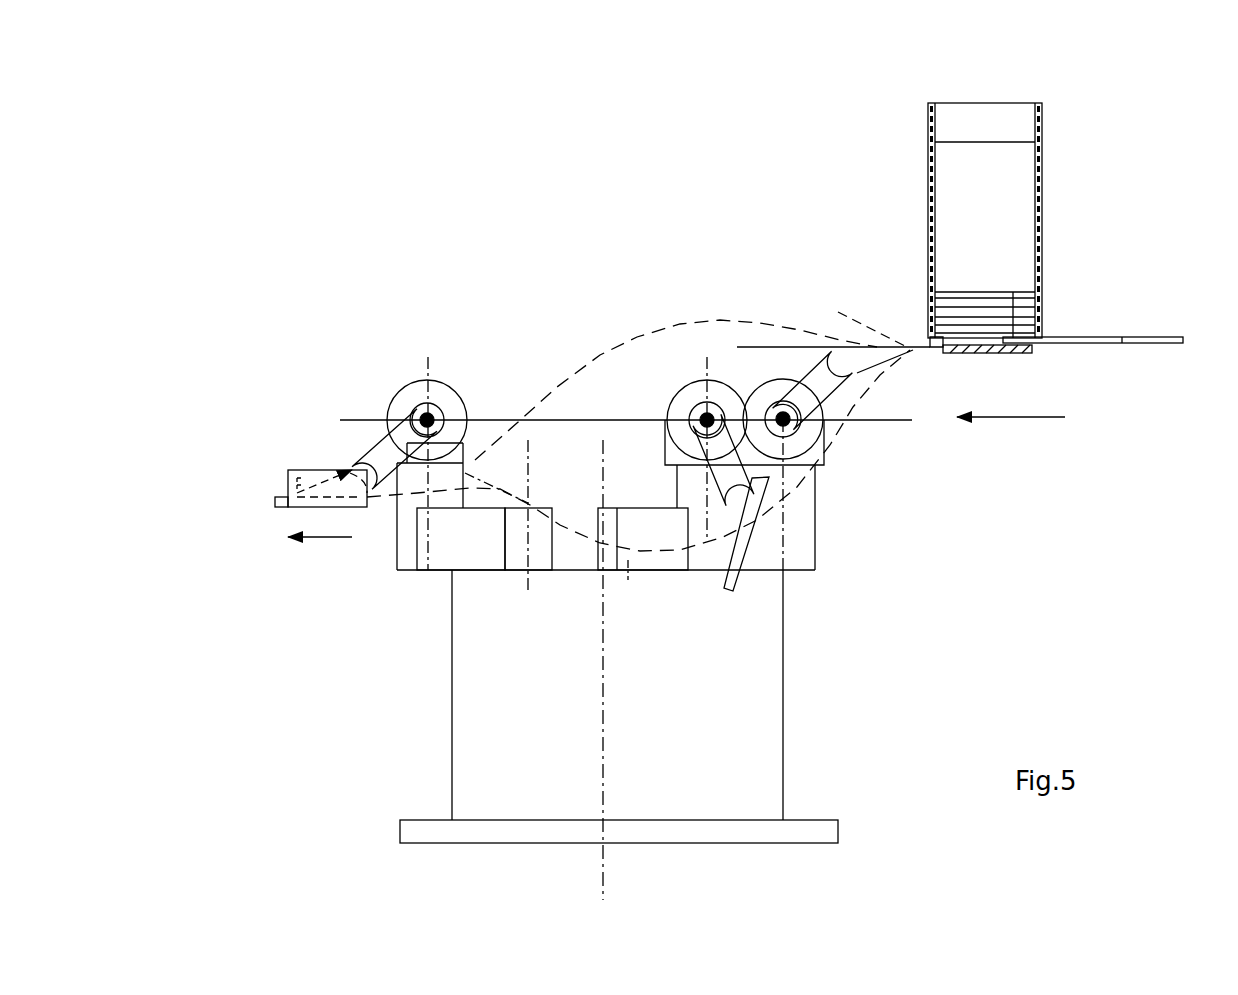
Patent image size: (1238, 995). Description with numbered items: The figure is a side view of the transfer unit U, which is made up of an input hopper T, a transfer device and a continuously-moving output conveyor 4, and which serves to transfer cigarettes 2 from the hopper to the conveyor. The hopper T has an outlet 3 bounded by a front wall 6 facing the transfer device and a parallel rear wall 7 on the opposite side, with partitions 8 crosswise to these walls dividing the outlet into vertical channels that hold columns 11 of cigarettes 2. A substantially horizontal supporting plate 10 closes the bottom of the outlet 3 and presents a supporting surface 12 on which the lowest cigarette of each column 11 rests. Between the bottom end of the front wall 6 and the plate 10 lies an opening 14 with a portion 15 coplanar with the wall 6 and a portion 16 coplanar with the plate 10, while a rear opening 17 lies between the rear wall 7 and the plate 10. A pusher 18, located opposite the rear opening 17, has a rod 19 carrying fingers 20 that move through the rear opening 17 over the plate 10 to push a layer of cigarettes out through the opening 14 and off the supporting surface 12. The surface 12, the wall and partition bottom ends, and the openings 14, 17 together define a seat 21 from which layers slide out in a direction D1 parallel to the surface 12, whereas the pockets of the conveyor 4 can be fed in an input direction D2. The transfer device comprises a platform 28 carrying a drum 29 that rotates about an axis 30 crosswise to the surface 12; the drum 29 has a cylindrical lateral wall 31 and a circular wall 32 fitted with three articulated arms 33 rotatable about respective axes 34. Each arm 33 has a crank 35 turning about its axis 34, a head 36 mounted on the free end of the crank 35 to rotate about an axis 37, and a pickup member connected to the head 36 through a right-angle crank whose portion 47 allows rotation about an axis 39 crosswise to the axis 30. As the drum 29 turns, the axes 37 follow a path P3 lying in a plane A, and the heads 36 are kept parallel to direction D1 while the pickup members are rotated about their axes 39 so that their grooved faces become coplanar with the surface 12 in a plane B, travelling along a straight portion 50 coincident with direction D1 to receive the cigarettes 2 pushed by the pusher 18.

The cigarettes 2 is at (1027, 305).
The outlet 3 is at (1075, 228).
The output conveyor 4 is at (270, 522).
The front wall 6 is at (930, 175).
The rear wall 7 is at (1040, 188).
The partitions 8 is at (985, 165).
The supporting plate 10 is at (1013, 353).
The columns 11 is at (997, 298).
The supporting surface 12 is at (985, 343).
The opening 14 is at (923, 362).
The portion 15 is at (925, 340).
The portion 16 is at (935, 352).
The rear opening 17 is at (1047, 325).
The pusher 18 is at (1142, 350).
The rod 19 is at (1165, 340).
The fingers 20 is at (1092, 342).
The seat 21 is at (915, 290).
The platform 28 is at (435, 833).
The drum 29 is at (445, 748).
The axis 30 is at (603, 857).
The cylindrical lateral wall 31 is at (465, 685).
The circular wall 32 is at (580, 560).
The articulated arms 33 is at (403, 368).
The axes 34 is at (662, 610).
The crank 35 is at (443, 570).
The head 36 is at (455, 403).
The axis 37 is at (433, 372).
The axis 39 is at (410, 405).
The portion 47 is at (377, 460).
The straight portion 50 is at (857, 316).
The input hopper T is at (1073, 95).
The transfer unit U is at (280, 307).
The plane A is at (873, 423).
The plane B is at (790, 347).
The path P3 is at (583, 370).
The direction D1 is at (1023, 420).
The input direction D2 is at (327, 537).